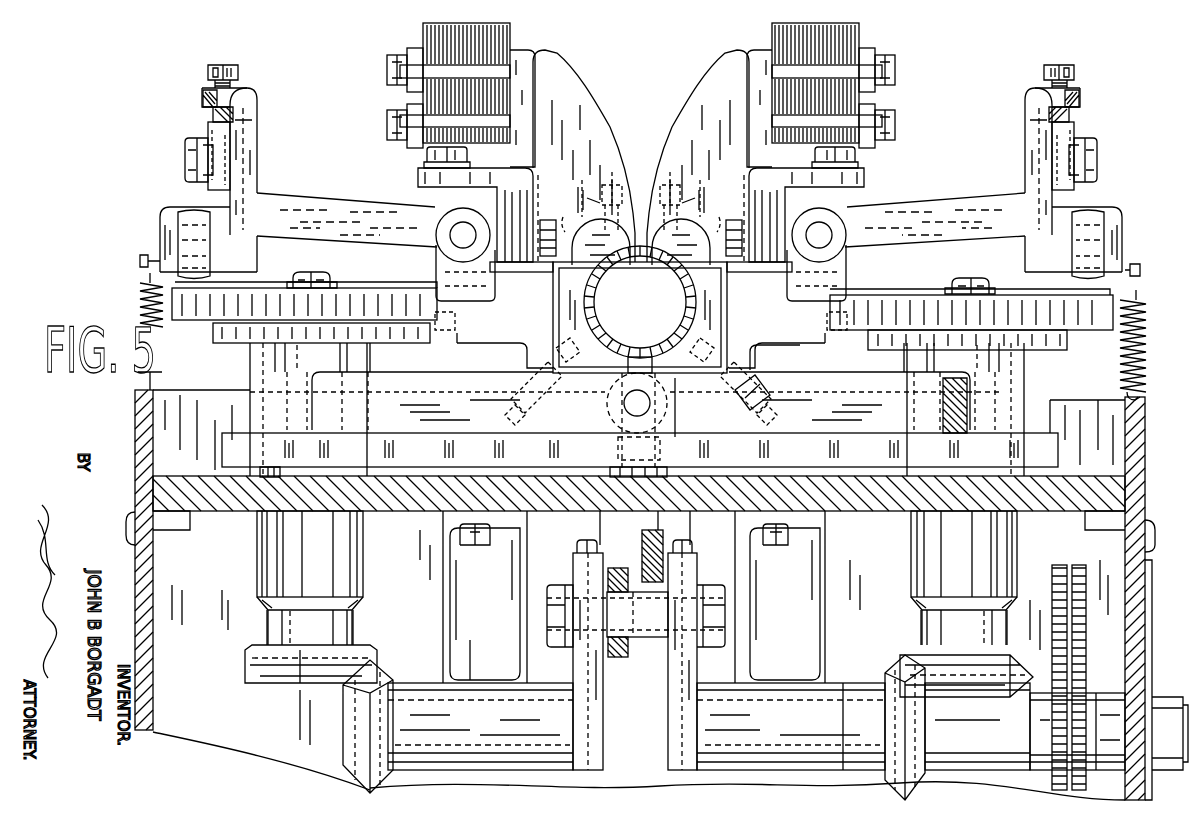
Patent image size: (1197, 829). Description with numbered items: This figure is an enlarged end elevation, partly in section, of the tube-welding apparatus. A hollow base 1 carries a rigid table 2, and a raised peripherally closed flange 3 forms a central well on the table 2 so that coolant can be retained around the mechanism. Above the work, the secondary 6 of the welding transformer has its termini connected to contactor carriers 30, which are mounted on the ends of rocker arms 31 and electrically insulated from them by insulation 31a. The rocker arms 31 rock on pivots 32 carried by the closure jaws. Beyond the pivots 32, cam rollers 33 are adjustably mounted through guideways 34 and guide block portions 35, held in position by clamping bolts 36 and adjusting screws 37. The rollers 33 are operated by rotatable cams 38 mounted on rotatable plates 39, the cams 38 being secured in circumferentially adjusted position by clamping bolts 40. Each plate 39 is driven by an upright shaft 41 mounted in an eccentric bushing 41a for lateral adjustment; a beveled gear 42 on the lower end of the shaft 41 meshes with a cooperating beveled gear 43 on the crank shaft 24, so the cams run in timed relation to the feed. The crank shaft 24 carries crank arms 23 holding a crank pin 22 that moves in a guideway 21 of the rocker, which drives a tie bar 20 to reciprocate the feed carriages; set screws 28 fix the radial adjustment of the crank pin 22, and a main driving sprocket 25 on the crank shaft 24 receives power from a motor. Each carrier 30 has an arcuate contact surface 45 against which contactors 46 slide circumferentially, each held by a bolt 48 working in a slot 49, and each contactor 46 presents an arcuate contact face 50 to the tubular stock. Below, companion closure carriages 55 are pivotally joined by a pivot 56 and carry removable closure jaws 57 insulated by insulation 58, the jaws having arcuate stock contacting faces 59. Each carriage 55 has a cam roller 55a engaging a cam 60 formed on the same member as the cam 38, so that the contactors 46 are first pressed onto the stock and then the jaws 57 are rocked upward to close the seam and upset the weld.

The hollow base 1 is at (1145, 612).
The table 2 is at (1138, 518).
The raised peripherally closed flange 3 is at (1138, 478).
The secondary 6 is at (505, 40).
The tie bar 20 is at (642, 540).
The guideway 21 is at (626, 562).
The crank pin 22 is at (640, 642).
The crank arms 23 is at (668, 728).
The crank shaft 24 is at (488, 708).
The main driving sprocket 25 is at (1055, 582).
The set screws 28 is at (588, 540).
The contactor carriers 30 is at (583, 100).
The rocker arms 31 is at (352, 198).
The insulation 31a is at (418, 186).
The pivots 32 is at (450, 236).
The cam rollers 33 is at (214, 264).
The guideways 34 is at (244, 142).
The guide block portions 35 is at (208, 178).
The clamping bolts 36 is at (186, 150).
The adjusting screws 37 is at (232, 52).
The rotatable cams 38 is at (140, 290).
The rotatable plates 39 is at (213, 334).
The clamping bolts 40 is at (318, 264).
The upright shaft 41 is at (262, 526).
The eccentric bushing 41a is at (345, 290).
The beveled gear 42 is at (245, 662).
The beveled gear 43 is at (385, 675).
The arcuate contact surface 45 is at (595, 222).
The contactors 46 is at (603, 244).
The bolt 48 is at (608, 183).
The slot 49 is at (600, 198).
The arcuate contact face 50 is at (660, 280).
The closure carriages 55 is at (527, 352).
The cam roller 55a is at (452, 336).
The pivot 56 is at (660, 405).
The closure jaws 57 is at (692, 310).
The insulation 58 is at (772, 366).
The stock contacting faces 59 is at (636, 356).
The cam 60 is at (445, 326).